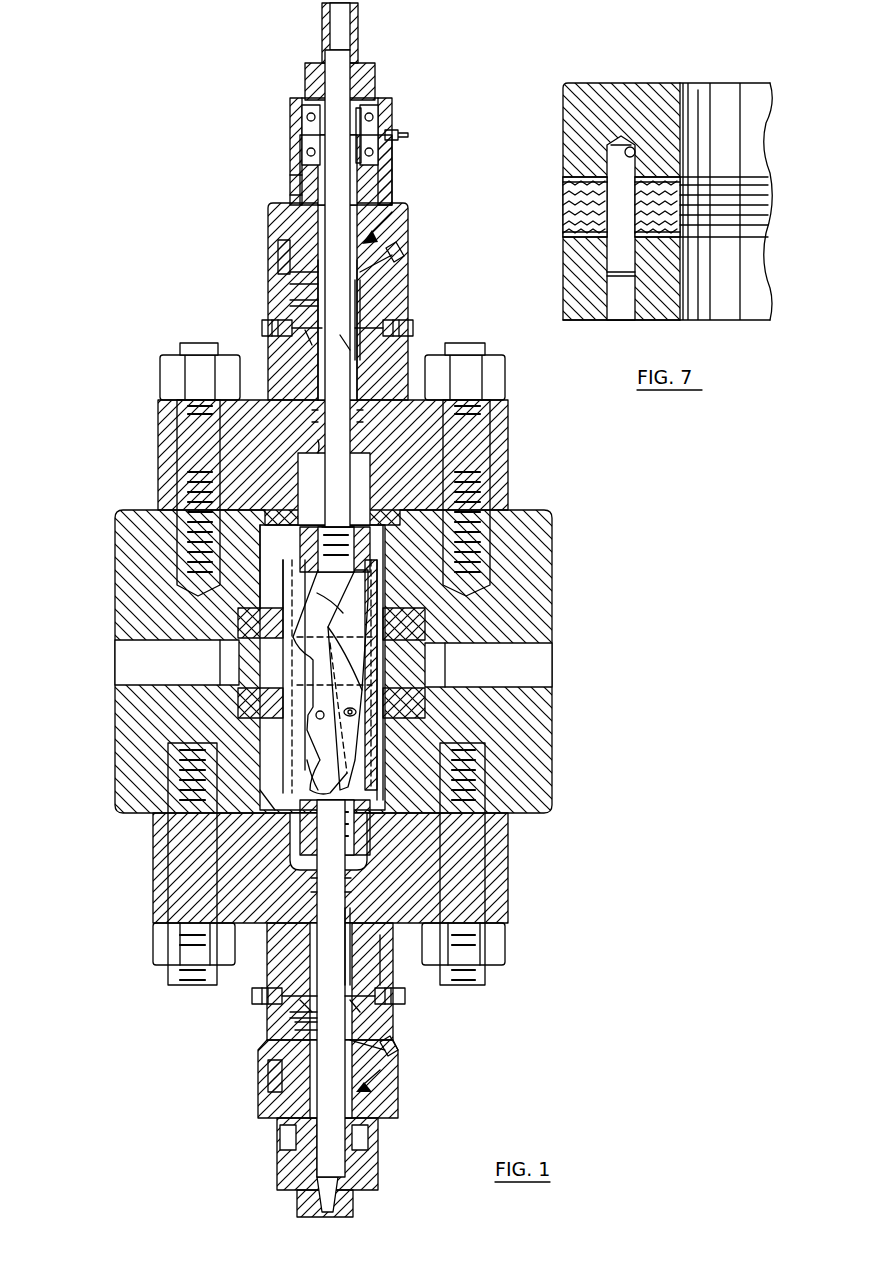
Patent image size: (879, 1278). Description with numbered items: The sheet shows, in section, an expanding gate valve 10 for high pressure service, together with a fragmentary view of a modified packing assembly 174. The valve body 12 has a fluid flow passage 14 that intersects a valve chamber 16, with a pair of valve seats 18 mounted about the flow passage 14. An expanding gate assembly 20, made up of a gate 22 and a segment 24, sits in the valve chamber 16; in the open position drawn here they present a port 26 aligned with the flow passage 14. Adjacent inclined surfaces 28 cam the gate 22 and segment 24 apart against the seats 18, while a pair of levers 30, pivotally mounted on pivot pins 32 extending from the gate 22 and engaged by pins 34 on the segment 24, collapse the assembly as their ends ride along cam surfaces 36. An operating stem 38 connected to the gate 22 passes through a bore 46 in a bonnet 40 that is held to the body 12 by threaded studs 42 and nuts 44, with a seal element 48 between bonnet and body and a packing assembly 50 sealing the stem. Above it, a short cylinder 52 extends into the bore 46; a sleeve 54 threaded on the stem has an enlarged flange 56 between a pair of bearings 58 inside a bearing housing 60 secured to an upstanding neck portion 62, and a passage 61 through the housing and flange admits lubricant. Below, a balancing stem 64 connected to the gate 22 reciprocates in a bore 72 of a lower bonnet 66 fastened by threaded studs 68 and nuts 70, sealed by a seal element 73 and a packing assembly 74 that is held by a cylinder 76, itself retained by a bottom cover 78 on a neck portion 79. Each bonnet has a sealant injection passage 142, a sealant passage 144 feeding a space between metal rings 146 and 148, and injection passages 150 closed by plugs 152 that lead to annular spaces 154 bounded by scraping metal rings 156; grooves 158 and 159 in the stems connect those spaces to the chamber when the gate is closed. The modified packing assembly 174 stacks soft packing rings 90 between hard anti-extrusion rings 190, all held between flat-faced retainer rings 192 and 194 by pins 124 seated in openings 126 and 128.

In FIG. 1, the expanding gate valve 10 is at (560, 508).
In FIG. 1, the valve body 12 is at (535, 582).
In FIG. 1, the fluid flow passage 14 is at (135, 655).
In FIG. 1, the valve chamber 16 is at (280, 555).
In FIG. 1, the valve seats 18 is at (262, 703).
In FIG. 1, the expanding gate assembly 20 is at (375, 605).
In FIG. 1, the gate 22 is at (308, 762).
In FIG. 1, the segment 24 is at (352, 752).
In FIG. 1, the port 26 is at (420, 633).
In FIG. 1, the inclined surfaces 28 is at (298, 583).
In FIG. 1, the levers 30 is at (318, 660).
In FIG. 1, the pivot pins 32 is at (315, 716).
In FIG. 1, the pins 34 is at (385, 740).
In FIG. 1, the cam surfaces 36 is at (262, 612).
In FIG. 1, the operating stem 38 is at (322, 350).
In FIG. 1, the bonnet 40 is at (414, 473).
In FIG. 1, the threaded studs 42 is at (195, 456).
In FIG. 1, the nuts 44 is at (200, 385).
In FIG. 1, the bore 46 is at (335, 375).
In FIG. 1, the seal element 48 is at (298, 530).
In FIG. 1, the packing assembly 50 is at (410, 218).
In FIG. 1, the short cylinder 52 is at (394, 182).
In FIG. 1, the sleeve 54 is at (300, 118).
In FIG. 1, the enlarged flange 56 is at (305, 160).
In FIG. 1, the bearings 58 is at (368, 120).
In FIG. 1, the bearing housing 60 is at (405, 135).
In FIG. 1, the passage 61 is at (358, 100).
In FIG. 1, the upstanding neck portion 62 is at (292, 193).
In FIG. 1, the balancing stem 64 is at (338, 950).
In FIG. 1, the lower bonnet 66 is at (262, 845).
In FIG. 1, the threaded studs 68 is at (192, 860).
In FIG. 1, the nuts 70 is at (185, 945).
In FIG. 1, the bore 72 is at (320, 945).
In FIG. 1, the seal element 73 is at (372, 832).
In FIG. 1, the packing assembly 74 is at (382, 1083).
In FIG. 1, the cylinder 76 is at (380, 1135).
In FIG. 1, the bottom cover 78 is at (372, 1160).
In FIG. 1, the neck portion 79 is at (290, 1132).
In FIG. 7, the packing rings 90 is at (563, 216).
In FIG. 7, the pins 124 is at (612, 160).
In FIG. 7, the openings 126 is at (636, 150).
In FIG. 7, the openings 128 is at (615, 295).
In FIG. 1, the sealant injection passage 142 is at (278, 252).
In FIG. 1, the sealant passage 144 is at (402, 262).
In FIG. 1, the metal ring 146 is at (292, 279).
In FIG. 1, the metal ring 148 is at (300, 296).
In FIG. 1, the injection passages 150 is at (305, 335).
In FIG. 1, the plugs 152 is at (262, 327).
In FIG. 1, the annular spaces 154 is at (368, 302).
In FIG. 1, the metal rings 156 is at (358, 412).
In FIG. 1, the groove 158 is at (306, 452).
In FIG. 1, the groove 159 is at (382, 945).
In FIG. 7, the modified packing assembly 174 is at (537, 115).
In FIG. 7, the anti-extrusion rings 190 is at (565, 178).
In FIG. 7, the packing retainer ring 192 is at (625, 95).
In FIG. 7, the packing retainer ring 194 is at (578, 282).